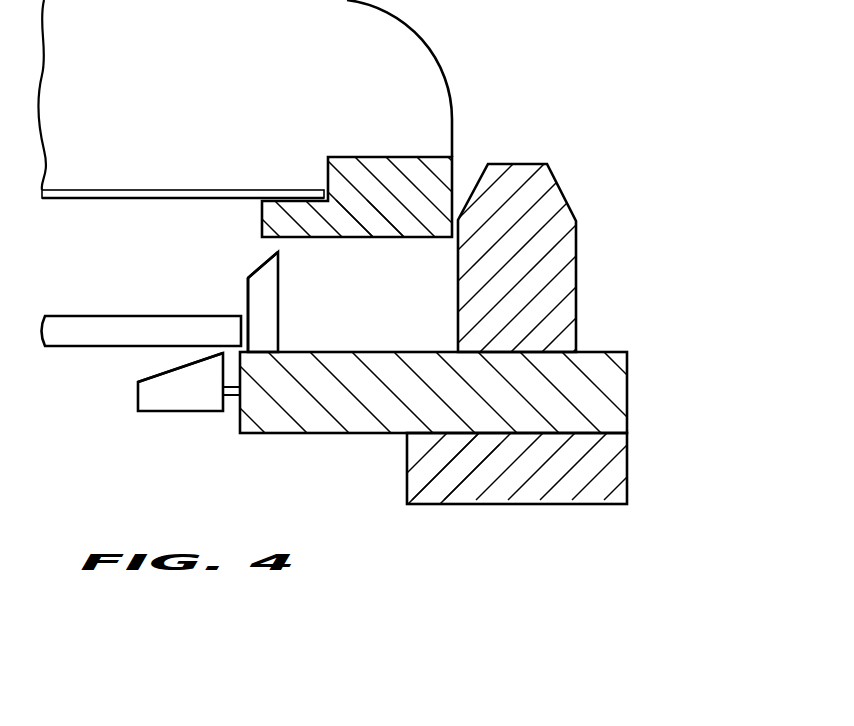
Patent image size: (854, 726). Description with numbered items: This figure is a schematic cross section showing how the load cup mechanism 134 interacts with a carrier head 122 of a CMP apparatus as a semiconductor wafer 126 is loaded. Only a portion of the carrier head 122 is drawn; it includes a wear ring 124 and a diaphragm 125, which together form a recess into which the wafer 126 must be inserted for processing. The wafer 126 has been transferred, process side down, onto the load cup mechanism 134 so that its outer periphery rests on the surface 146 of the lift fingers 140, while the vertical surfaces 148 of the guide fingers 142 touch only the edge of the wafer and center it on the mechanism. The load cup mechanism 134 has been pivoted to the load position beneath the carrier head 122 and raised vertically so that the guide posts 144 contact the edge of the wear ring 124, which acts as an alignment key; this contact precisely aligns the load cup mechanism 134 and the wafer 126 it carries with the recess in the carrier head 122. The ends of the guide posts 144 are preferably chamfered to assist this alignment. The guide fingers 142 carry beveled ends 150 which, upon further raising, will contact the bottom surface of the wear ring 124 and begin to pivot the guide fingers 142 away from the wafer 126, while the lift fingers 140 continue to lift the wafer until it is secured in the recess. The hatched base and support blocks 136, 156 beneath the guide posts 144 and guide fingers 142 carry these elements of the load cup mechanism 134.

The carrier head 122 is at (436, 49).
The wear ring 124 is at (386, 232).
The diaphragm 125 is at (157, 188).
The semiconductor wafer 126 is at (110, 315).
The load cup mechanism 134 is at (674, 319).
The base 136 is at (622, 462).
The lift fingers 140 is at (184, 412).
The guide fingers 142 is at (280, 318).
The guide posts 144 is at (577, 279).
The surface 146 is at (163, 372).
The vertical surfaces 148 is at (247, 292).
The beveled ends 150 is at (260, 267).
The platform 156 is at (622, 402).